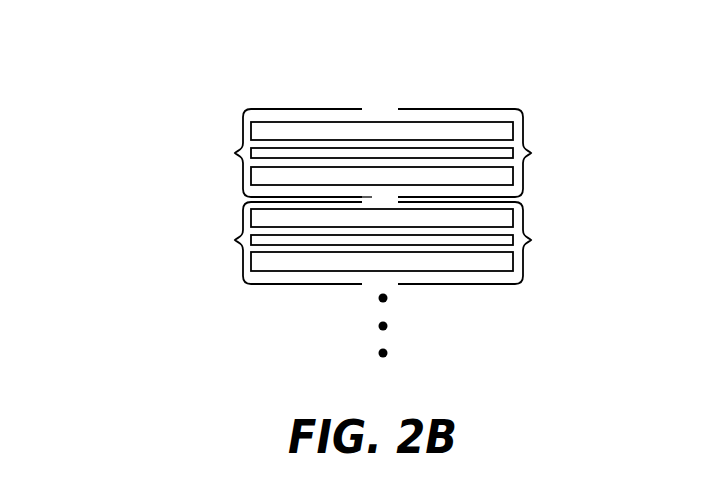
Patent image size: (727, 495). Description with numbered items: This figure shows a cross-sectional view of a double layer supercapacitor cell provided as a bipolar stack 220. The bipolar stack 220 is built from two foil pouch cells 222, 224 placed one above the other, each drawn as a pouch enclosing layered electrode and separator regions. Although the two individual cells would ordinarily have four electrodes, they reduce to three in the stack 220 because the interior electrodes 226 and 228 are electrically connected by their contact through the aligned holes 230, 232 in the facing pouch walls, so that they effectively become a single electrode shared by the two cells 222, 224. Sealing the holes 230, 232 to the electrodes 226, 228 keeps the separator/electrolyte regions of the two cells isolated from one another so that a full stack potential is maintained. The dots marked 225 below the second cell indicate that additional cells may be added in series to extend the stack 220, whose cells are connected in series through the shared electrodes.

The bipolar stack 220 is at (192, 112).
The foil pouch cell 222 is at (531, 153).
The foil pouch cell 224 is at (531, 240).
The additional cells (ellipsis) 225 is at (398, 327).
The interior electrode 226 is at (502, 176).
The interior electrode 228 is at (500, 214).
The aligned hole 230 is at (378, 192).
The aligned hole 232 is at (376, 190).